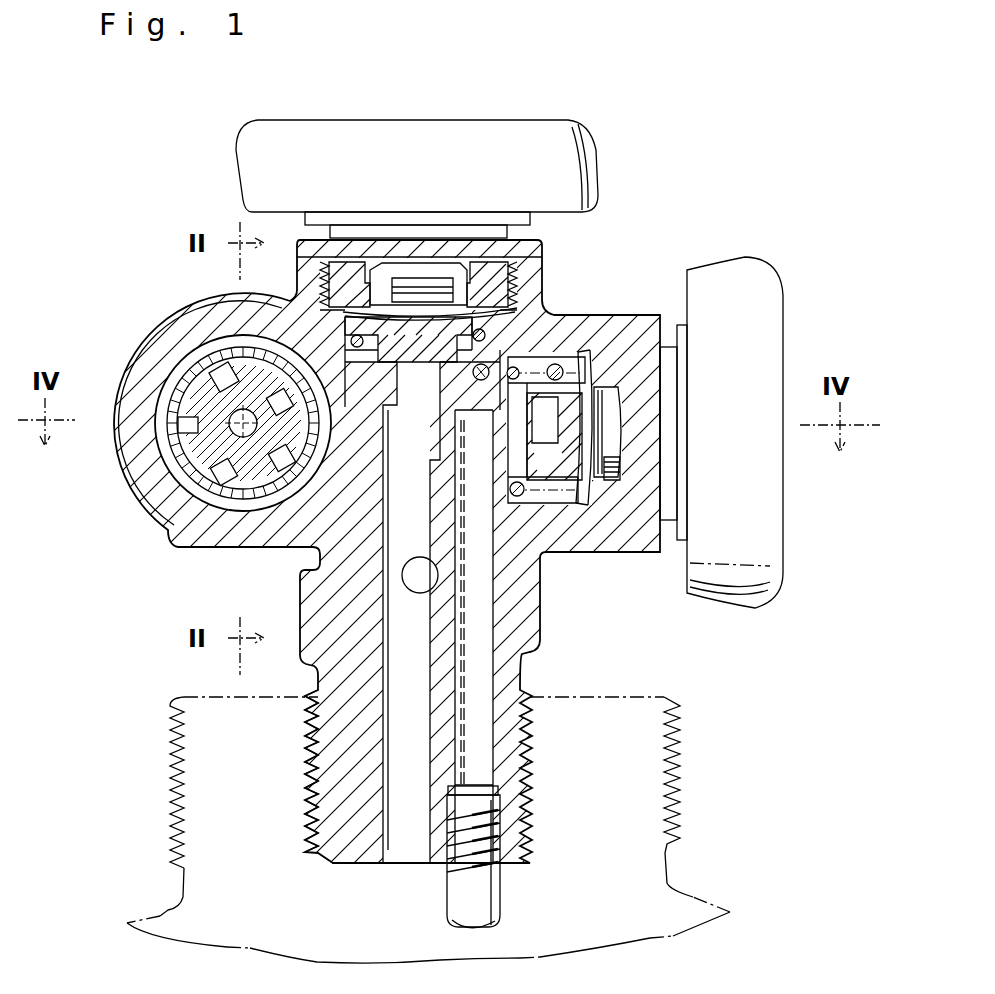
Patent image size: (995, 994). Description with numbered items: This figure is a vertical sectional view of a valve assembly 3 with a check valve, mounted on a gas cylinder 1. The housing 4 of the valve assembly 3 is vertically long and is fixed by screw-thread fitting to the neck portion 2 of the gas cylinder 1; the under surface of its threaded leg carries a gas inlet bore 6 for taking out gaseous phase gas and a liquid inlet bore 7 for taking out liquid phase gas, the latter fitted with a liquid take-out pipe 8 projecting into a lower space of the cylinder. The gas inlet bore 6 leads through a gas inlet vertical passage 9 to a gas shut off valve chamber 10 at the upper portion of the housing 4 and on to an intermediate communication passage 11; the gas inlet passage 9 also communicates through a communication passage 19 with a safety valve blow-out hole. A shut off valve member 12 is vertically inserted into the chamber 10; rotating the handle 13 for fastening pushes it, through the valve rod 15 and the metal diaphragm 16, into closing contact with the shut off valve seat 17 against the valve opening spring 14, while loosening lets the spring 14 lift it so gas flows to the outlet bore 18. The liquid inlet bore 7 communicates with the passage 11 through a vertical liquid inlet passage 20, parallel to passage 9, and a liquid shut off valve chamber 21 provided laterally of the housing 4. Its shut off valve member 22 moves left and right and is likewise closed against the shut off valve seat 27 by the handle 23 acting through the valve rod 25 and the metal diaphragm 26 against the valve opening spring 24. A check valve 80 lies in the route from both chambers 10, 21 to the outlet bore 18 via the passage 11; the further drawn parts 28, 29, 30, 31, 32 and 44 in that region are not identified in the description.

The gas cylinder 1 is at (163, 922).
The neck portion 2 is at (185, 793).
The valve assembly 3 is at (615, 82).
The housing 4 is at (545, 622).
The gas inlet bore 6 is at (395, 865).
The liquid inlet bore 7 is at (497, 860).
The liquid take-out pipe 8 is at (450, 912).
The gas inlet vertical passage 9 is at (385, 745).
The gas shut off valve chamber 10 is at (532, 330).
The intermediate communication passage 11 is at (330, 345).
The shut off valve member 12 is at (448, 310).
The handle 13 is at (480, 126).
The valve opening spring 14 is at (512, 305).
The valve rod 15 is at (432, 280).
The metal diaphragm 16 is at (393, 262).
The shut off valve seat 17 is at (411, 612).
The outlet bore 18 is at (160, 500).
The communication passage 19 is at (402, 574).
The vertical liquid inlet passage 20 is at (490, 655).
The liquid shut off valve chamber 21 is at (552, 504).
The shut off valve member 22 is at (620, 368).
The handle 23 is at (775, 573).
The valve opening spring 24 is at (585, 355).
The valve rod 25 is at (605, 425).
The metal diaphragm 26 is at (605, 462).
The shut off valve seat 27 is at (479, 636).
The ratchet ring 28 is at (185, 378).
The toothed ring 29 is at (175, 465).
The bottom wall of body 30 is at (178, 550).
The rotor disc 31 is at (165, 400).
The pawl 32 is at (160, 440).
The O-ring 44 is at (215, 385).
The check valve 80 is at (212, 548).